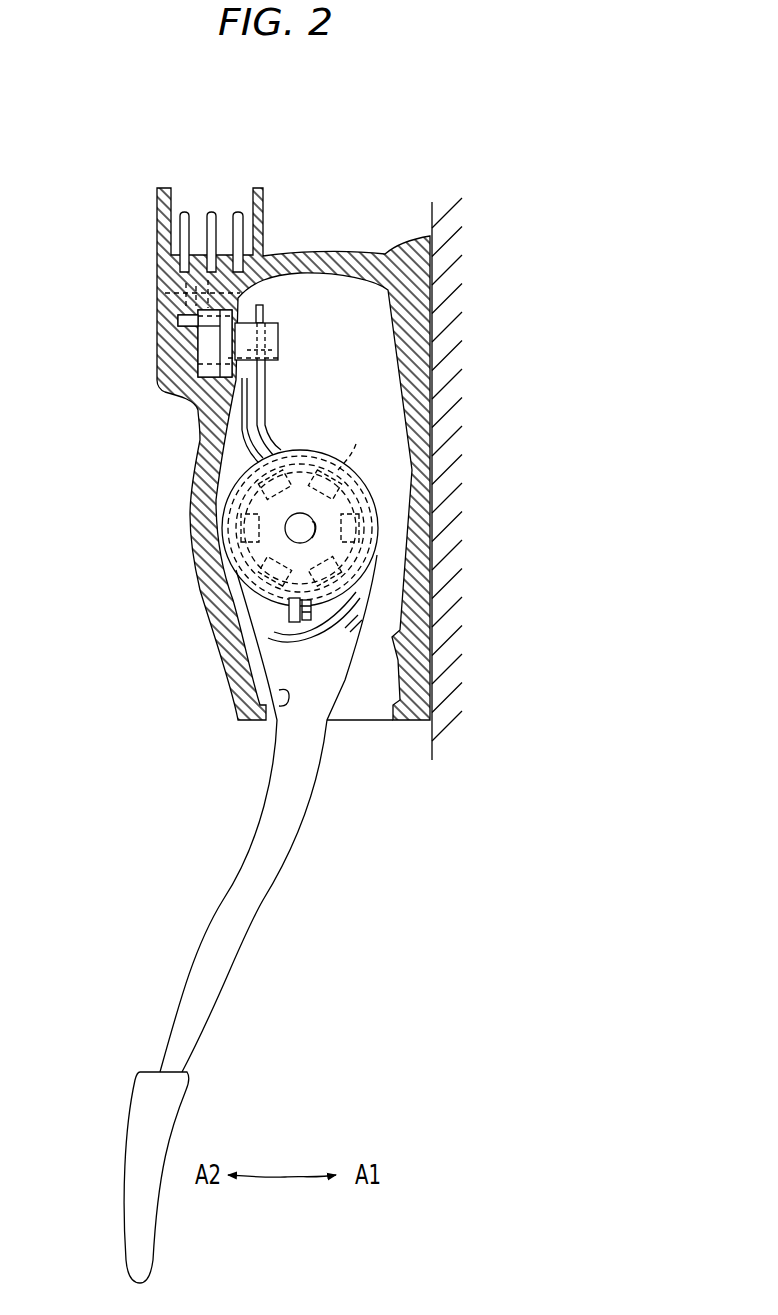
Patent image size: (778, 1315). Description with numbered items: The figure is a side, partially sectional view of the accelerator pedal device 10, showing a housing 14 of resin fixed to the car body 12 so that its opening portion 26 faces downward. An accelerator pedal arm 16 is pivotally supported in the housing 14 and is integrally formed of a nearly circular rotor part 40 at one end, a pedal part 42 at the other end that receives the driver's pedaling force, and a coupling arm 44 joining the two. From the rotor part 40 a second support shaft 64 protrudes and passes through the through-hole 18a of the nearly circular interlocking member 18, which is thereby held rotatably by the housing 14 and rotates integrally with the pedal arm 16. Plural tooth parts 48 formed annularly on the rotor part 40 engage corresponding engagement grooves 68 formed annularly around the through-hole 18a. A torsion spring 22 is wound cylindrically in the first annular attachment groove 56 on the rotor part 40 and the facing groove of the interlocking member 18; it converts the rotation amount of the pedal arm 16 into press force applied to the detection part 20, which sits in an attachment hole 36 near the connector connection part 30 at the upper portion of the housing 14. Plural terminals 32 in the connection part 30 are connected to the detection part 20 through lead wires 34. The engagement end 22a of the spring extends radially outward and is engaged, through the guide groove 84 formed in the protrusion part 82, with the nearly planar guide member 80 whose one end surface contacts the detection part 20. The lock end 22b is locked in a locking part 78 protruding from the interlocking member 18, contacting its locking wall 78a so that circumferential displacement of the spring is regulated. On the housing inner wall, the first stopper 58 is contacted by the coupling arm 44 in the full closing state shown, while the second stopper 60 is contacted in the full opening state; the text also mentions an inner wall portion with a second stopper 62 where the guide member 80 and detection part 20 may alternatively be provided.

The accelerator pedal device 10 is at (314, 186).
The car body 12 is at (430, 228).
The housing 14 is at (188, 536).
The accelerator pedal arm 16 is at (251, 860).
The interlocking member 18 is at (362, 468).
The through-hole 18a is at (313, 521).
The detection part 20 is at (203, 352).
The torsion spring 22 is at (270, 446).
The engagement end 22a is at (266, 312).
The lock end 22b is at (309, 621).
The opening portion 26 is at (402, 722).
The connector connection part 30 is at (155, 219).
The terminals 32 is at (208, 245).
The lead wires 34 is at (165, 293).
The attachment hole 36 is at (209, 351).
The rotor part 40 is at (232, 486).
The pedal part 42 is at (135, 1152).
The coupling arm 44 is at (214, 973).
The tooth parts 48 is at (247, 548).
The first annular attachment groove 56 is at (359, 427).
The first stopper 58 is at (431, 760).
The second stopper 60 is at (268, 724).
The second stopper 62 is at (396, 655).
The second support shaft 64 is at (302, 517).
The engagement grooves 68 is at (250, 516).
The locking part 78 is at (287, 612).
The locking wall 78a is at (303, 626).
The guide member 80 is at (280, 340).
The protrusion part 82 is at (248, 423).
The guide groove 84 is at (280, 360).